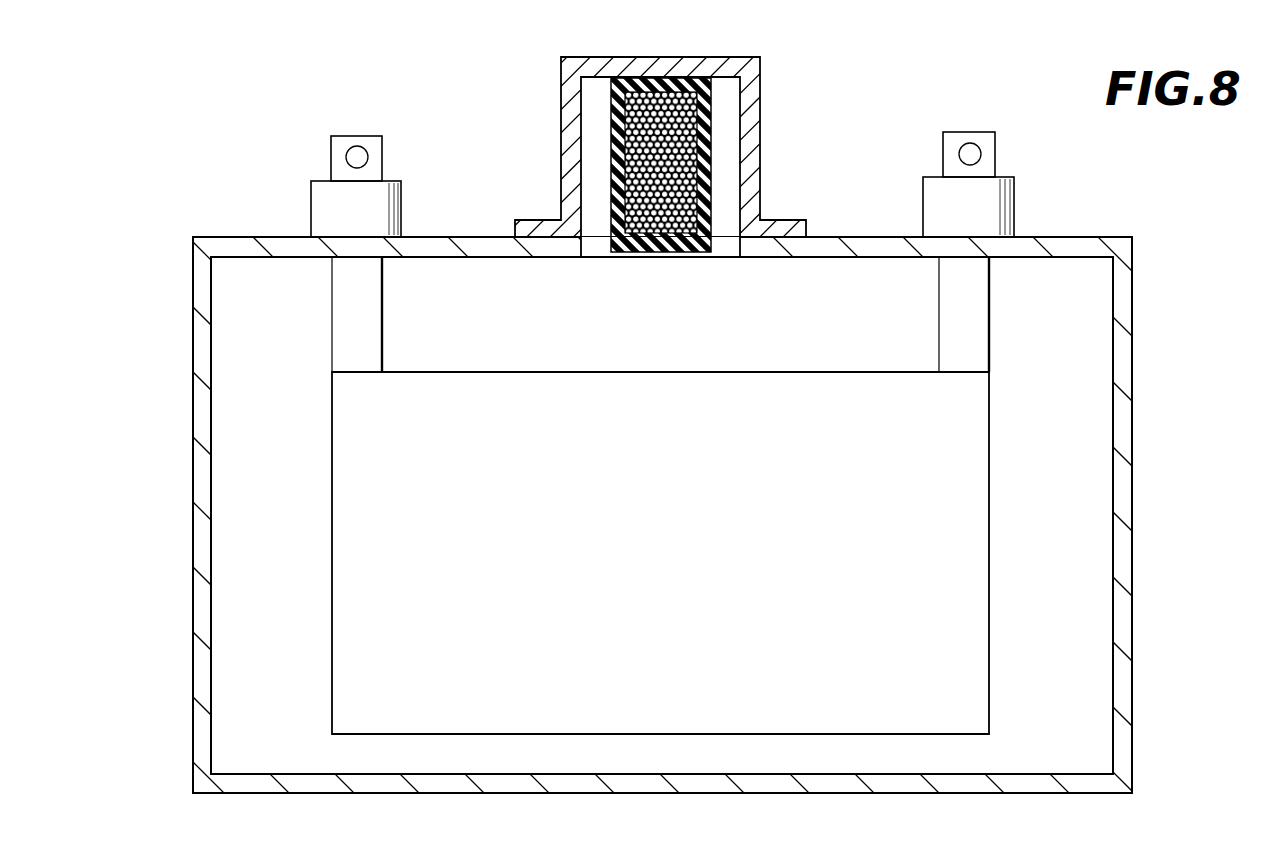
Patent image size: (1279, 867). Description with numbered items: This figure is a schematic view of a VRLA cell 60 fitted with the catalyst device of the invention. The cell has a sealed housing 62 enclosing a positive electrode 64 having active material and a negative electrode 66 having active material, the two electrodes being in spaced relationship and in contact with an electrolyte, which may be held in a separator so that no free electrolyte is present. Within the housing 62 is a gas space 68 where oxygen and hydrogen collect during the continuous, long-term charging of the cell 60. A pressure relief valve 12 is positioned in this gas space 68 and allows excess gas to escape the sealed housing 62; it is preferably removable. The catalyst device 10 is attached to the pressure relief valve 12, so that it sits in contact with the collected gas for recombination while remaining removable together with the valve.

The catalyst device 10 is at (712, 122).
The pressure relief valve 12 is at (561, 121).
The VRLA cell 60 is at (1135, 508).
The sealed housing 62 is at (1133, 349).
The positive electrode 64 is at (980, 345).
The negative electrode 66 is at (360, 405).
The gas space 68 is at (723, 257).